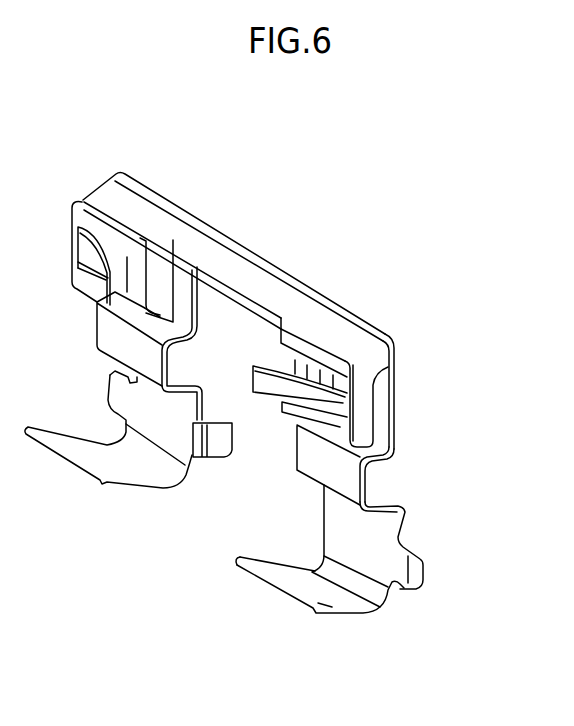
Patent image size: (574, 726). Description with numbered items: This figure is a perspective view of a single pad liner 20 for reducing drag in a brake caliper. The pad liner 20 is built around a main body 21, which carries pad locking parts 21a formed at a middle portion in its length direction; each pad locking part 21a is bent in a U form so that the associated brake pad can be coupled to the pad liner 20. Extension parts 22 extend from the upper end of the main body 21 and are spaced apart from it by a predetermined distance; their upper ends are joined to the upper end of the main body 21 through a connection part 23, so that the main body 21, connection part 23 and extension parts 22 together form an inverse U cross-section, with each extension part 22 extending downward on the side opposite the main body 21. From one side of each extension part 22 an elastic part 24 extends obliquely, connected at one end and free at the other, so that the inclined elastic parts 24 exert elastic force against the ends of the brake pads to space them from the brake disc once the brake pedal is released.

The pad liner 20 is at (330, 250).
The main body 21 is at (395, 392).
The pad locking part 21a is at (365, 482).
The extension part 22 is at (350, 448).
The connection part 23 is at (237, 267).
The elastic part 24 is at (273, 388).